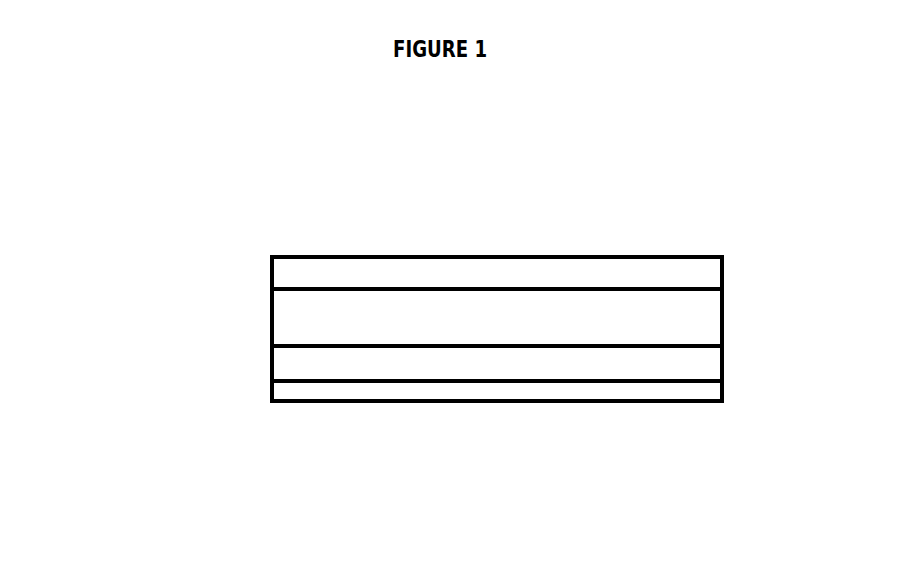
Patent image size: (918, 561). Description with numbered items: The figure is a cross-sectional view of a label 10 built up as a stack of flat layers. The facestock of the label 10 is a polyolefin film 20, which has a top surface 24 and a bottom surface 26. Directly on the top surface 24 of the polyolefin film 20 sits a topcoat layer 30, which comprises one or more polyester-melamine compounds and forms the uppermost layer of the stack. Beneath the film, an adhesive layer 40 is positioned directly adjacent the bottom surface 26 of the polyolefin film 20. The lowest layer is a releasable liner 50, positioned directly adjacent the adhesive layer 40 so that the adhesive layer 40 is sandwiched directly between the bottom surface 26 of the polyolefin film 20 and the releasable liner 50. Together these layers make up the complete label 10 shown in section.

The label 10 is at (255, 208).
The polyolefin film 20 is at (317, 318).
The top surface 24 is at (553, 287).
The bottom surface 26 is at (657, 348).
The topcoat layer 30 is at (397, 275).
The adhesive layer 40 is at (303, 362).
The releasable liner 50 is at (567, 390).